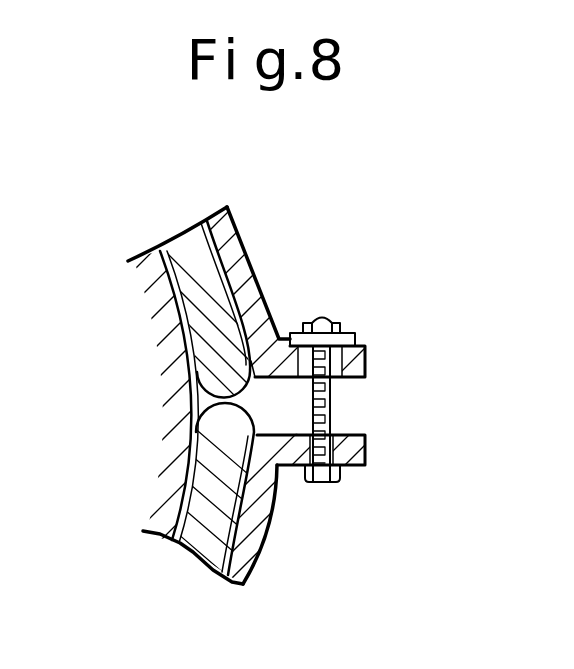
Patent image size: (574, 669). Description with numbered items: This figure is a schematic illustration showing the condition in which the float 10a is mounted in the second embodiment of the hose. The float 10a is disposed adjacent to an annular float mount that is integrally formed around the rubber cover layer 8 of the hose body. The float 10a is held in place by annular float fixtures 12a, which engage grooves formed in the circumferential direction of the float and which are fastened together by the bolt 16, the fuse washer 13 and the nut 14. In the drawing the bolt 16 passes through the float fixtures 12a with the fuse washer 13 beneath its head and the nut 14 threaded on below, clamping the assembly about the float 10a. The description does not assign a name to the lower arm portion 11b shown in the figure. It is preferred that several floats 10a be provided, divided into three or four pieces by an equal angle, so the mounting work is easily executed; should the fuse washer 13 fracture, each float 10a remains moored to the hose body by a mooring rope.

The rubber cover layer 8 is at (146, 512).
The float 10a is at (188, 250).
The annular float fixture 12a is at (257, 270).
The lower arm 11b is at (258, 524).
The fuse washer 13 is at (343, 334).
The nut 14 is at (322, 318).
The bolt 16 is at (340, 473).